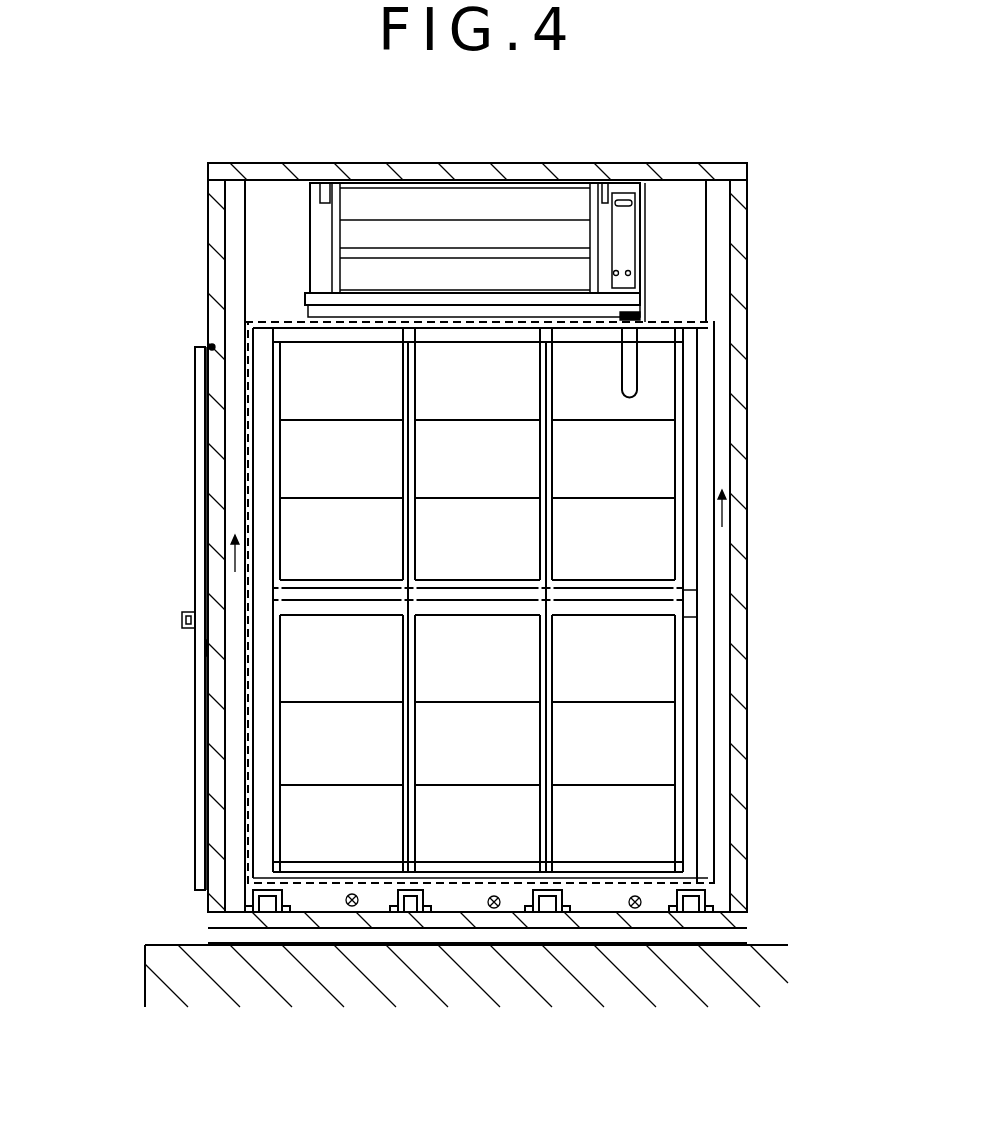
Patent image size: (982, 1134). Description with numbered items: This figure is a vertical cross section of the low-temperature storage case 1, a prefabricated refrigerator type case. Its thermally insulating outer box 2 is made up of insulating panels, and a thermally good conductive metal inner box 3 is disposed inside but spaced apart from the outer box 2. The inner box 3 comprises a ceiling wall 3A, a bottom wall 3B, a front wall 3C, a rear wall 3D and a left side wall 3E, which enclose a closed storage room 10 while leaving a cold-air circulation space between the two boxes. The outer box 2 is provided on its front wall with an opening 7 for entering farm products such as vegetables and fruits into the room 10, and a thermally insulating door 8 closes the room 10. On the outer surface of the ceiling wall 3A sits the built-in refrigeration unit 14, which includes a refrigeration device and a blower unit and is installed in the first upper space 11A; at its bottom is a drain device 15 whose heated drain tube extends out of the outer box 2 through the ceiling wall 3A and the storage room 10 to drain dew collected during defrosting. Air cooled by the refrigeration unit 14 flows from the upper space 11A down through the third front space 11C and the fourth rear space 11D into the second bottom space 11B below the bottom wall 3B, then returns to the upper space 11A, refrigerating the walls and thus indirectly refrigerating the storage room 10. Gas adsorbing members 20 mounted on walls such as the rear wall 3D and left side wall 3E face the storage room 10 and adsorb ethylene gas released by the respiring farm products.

The low-temperature storage case 1 is at (202, 200).
The thermally insulating outer box 2 is at (280, 165).
The thermally good conductive inner box 3 is at (275, 322).
The ceiling wall 3A is at (662, 318).
The bottom wall 3B is at (605, 890).
The front wall 3C is at (250, 421).
The rear wall 3D is at (715, 775).
The left side wall 3E is at (262, 718).
The opening 7 is at (210, 345).
The thermally insulating door 8 is at (200, 505).
The storage room 10 is at (497, 672).
The first upper space 11A is at (665, 265).
The second bottom space 11B is at (440, 900).
The third front space 11C is at (235, 648).
The fourth rear space 11D is at (722, 600).
The refrigeration unit 14 is at (410, 205).
The drain device 15 is at (630, 363).
The gas adsorbing members 20 is at (295, 462).